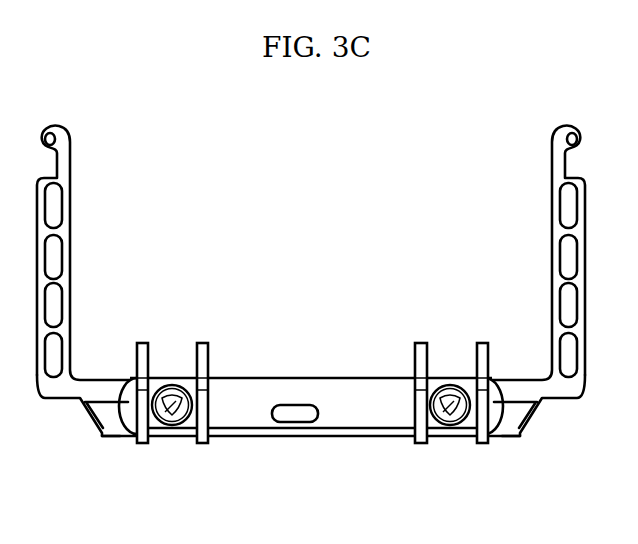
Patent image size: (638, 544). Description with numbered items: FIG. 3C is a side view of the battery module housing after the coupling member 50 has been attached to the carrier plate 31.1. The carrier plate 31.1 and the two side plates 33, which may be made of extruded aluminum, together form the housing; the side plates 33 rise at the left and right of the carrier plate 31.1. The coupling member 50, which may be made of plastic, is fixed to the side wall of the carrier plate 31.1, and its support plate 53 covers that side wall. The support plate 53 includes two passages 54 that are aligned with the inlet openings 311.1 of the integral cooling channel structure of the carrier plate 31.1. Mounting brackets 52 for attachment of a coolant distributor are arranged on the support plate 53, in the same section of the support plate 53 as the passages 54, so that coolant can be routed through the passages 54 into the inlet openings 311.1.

The side plate 33 is at (72, 178).
The coupling member 50 is at (311, 343).
The support plate 53 is at (377, 388).
The passage 54 is at (170, 385).
The mounting bracket 52 is at (432, 345).
The carrier plate 31.1 is at (124, 383).
The inlet opening 311.1 is at (155, 435).